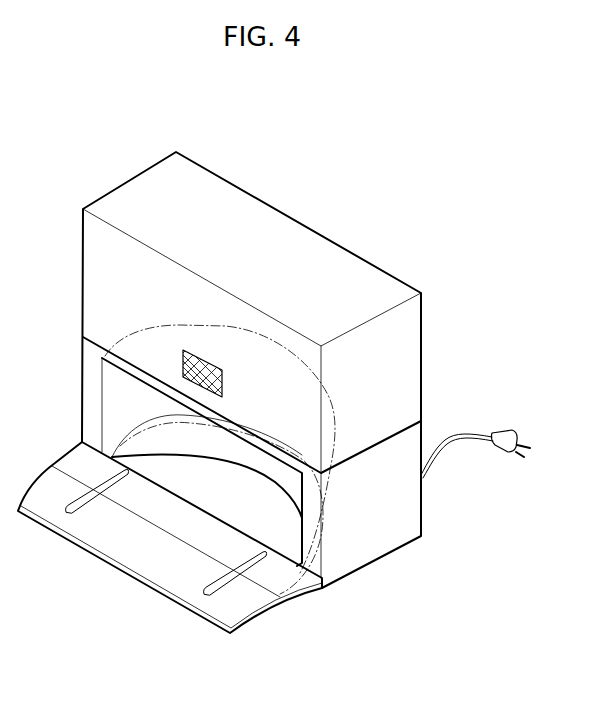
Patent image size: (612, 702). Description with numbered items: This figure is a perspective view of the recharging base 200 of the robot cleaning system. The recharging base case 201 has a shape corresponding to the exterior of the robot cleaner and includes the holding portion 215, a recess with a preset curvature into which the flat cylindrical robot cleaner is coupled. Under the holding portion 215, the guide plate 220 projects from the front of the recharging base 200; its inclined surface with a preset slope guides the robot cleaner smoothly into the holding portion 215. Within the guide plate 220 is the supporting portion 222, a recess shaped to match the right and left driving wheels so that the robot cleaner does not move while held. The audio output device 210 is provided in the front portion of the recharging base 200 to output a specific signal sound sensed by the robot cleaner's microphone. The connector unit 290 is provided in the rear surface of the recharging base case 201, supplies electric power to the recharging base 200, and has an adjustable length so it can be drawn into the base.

The recharging base 200 is at (82, 128).
The recharging base case 201 is at (102, 264).
The audio output device 210 is at (183, 365).
The holding portion 215 is at (122, 402).
The guide plate 220 is at (252, 603).
The supporting portion 222 is at (205, 588).
The connector unit 290 is at (505, 440).